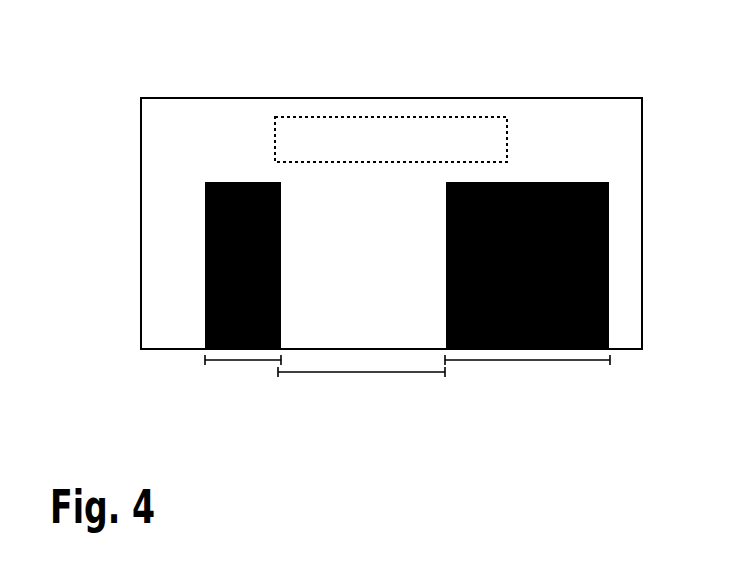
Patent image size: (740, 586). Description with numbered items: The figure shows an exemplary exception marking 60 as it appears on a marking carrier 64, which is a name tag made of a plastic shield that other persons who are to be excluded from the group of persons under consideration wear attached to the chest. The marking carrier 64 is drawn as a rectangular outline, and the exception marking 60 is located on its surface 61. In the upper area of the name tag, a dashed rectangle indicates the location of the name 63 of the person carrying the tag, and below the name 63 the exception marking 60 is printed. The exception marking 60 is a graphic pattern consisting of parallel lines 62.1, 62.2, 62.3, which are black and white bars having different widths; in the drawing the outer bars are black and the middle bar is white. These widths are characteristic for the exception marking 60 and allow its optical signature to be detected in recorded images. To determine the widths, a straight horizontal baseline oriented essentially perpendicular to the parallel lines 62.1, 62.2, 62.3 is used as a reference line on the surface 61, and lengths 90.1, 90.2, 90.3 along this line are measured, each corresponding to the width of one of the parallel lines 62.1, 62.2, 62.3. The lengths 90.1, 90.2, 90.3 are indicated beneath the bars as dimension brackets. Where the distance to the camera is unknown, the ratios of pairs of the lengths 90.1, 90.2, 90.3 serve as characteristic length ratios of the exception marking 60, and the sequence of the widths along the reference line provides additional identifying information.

The exception marking 60 is at (217, 182).
The surface of the marking carrier 61 is at (263, 125).
The parallel line 62.1 is at (228, 349).
The parallel line 62.2 is at (377, 340).
The parallel line 62.3 is at (500, 349).
The name 63 is at (402, 113).
The marking carrier 64 is at (575, 148).
The length 90.1 is at (243, 360).
The length 90.2 is at (302, 372).
The length 90.3 is at (562, 360).